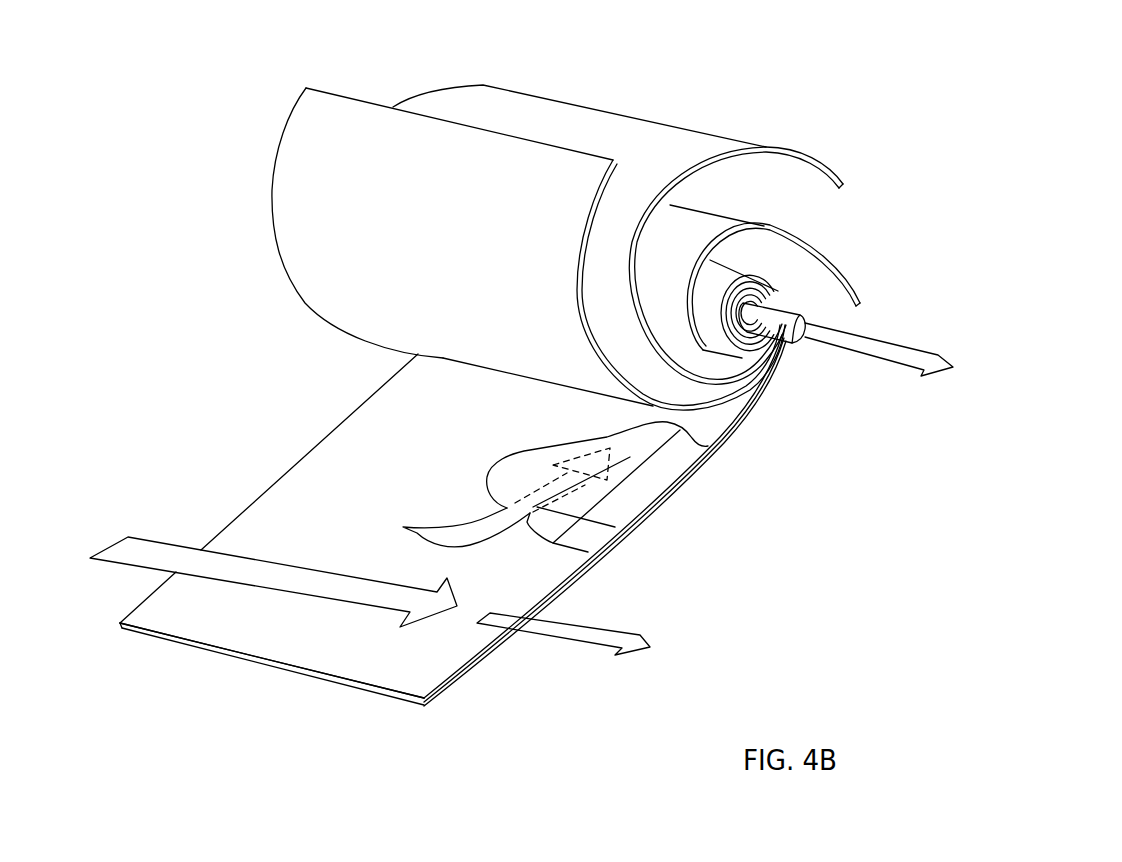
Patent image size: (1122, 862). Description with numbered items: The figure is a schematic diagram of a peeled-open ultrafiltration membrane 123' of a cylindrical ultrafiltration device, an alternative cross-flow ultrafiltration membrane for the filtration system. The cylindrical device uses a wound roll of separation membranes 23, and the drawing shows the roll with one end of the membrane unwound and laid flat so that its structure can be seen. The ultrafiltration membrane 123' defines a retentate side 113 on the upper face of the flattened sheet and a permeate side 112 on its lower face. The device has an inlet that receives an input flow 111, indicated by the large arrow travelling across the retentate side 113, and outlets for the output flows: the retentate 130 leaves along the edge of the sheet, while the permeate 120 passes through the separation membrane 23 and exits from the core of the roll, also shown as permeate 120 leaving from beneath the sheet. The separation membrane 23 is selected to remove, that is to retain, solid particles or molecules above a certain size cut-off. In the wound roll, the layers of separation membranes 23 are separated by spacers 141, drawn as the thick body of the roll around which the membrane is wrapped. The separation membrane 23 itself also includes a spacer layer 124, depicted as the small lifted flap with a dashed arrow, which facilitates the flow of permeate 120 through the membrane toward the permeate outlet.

The peeled-open ultrafiltration membrane 123' is at (484, 207).
The spacer 141 is at (297, 187).
The separation membrane 23 is at (690, 143).
The retentate side 113 is at (298, 482).
The input flow 111 is at (140, 550).
The permeate side 112 is at (245, 678).
The permeate 120 is at (888, 350).
The spacer layer 124 is at (630, 457).
The retentate 130 is at (563, 633).